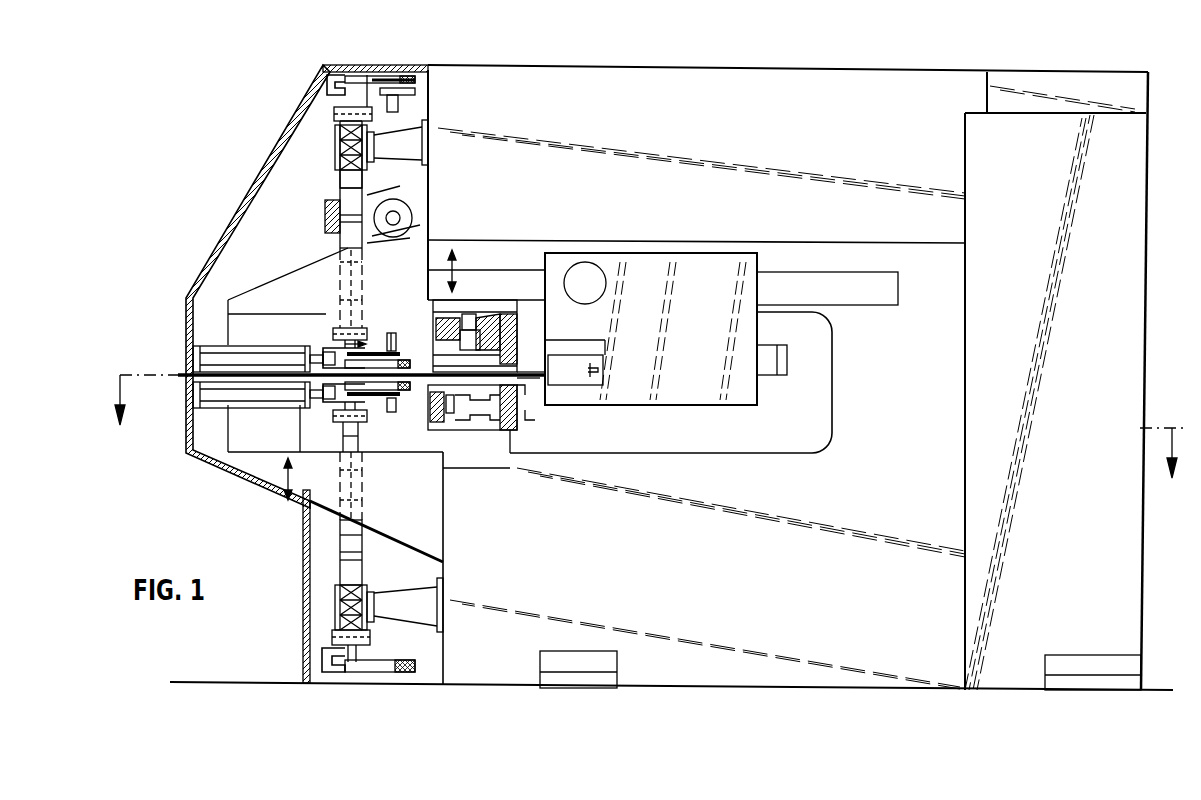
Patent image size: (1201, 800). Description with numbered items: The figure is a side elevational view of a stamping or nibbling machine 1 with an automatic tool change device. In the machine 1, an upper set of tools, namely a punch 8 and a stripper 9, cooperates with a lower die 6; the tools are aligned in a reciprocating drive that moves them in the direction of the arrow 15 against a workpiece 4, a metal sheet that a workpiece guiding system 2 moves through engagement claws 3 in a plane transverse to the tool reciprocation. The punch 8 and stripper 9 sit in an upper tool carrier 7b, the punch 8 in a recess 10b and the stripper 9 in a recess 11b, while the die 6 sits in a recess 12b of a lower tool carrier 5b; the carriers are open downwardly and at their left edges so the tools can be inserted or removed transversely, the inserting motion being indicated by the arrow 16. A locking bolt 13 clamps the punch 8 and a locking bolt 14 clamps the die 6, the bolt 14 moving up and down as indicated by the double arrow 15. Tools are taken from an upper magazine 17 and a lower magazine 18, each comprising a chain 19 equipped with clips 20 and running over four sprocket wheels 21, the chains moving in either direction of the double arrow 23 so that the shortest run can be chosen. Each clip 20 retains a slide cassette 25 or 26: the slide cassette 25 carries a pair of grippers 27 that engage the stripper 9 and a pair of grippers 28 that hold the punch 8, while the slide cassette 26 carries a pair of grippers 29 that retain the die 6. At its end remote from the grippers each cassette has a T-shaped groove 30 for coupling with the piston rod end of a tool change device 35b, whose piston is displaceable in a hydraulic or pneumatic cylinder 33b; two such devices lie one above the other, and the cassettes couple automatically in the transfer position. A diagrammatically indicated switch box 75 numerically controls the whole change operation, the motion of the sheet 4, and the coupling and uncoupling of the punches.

The stamping machine 1 is at (830, 530).
The workpiece guiding system 2 is at (690, 262).
The engagement claws 3 is at (578, 380).
The workpiece 4 is at (186, 380).
The lower tool carrier 5b is at (517, 428).
The die 6 is at (400, 400).
The upper tool carrier 7b is at (518, 345).
The punch 8 is at (416, 93).
The stripper 9 is at (416, 80).
The recess 10b is at (492, 322).
The recess 11b is at (500, 365).
The recess 12b is at (513, 390).
The locking bolt 13 is at (463, 315).
The locking bolt 14 is at (440, 420).
The arrow 15 is at (455, 265).
The arrow 16 is at (345, 335).
The upper magazine 17 is at (334, 163).
The lower magazine 18 is at (322, 550).
The chain 19 is at (340, 192).
The clip 20 is at (333, 112).
The sprocket wheel 21 is at (428, 143).
The double arrow 23 is at (283, 485).
The slide cassette 25 is at (347, 76).
The slide cassette 26 is at (345, 410).
The pair of grippers 27 is at (362, 76).
The pair of grippers 28 is at (385, 76).
The pair of grippers 29 is at (372, 412).
The T-shaped groove 30 is at (325, 84).
The pneumatic cylinder 33b is at (228, 476).
The tool change device 35b is at (262, 338).
The switch box 75 is at (972, 495).